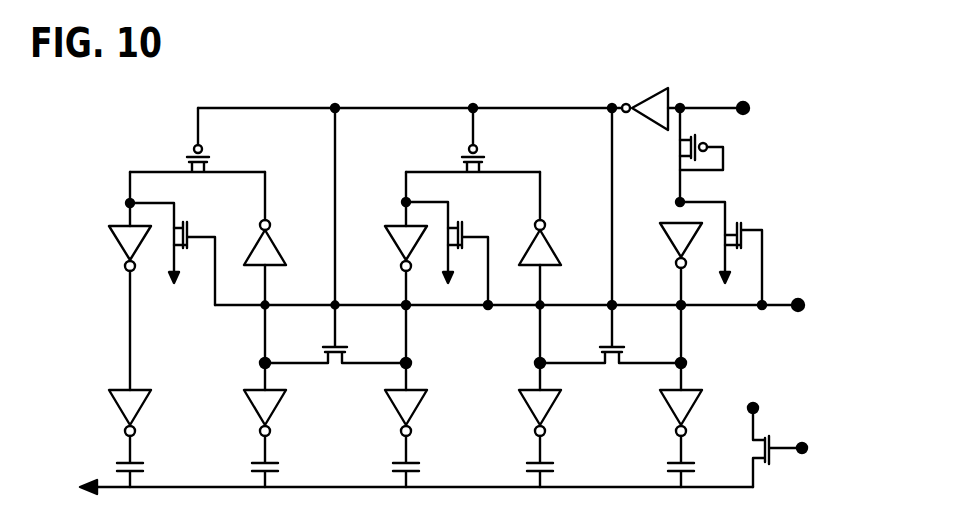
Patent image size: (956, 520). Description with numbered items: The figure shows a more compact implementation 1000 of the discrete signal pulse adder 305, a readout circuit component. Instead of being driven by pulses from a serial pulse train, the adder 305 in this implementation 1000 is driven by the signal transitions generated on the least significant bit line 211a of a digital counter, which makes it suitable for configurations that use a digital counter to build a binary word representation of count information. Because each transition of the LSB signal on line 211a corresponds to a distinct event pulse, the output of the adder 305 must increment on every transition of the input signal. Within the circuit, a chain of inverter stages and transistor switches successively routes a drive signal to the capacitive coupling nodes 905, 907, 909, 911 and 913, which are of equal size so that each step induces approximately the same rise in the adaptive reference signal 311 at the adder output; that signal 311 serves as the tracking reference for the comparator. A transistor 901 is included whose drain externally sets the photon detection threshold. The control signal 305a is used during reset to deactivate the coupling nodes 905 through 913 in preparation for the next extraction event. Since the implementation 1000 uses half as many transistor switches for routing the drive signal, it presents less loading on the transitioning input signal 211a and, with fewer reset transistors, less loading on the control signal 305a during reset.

The compact adder implementation 1000 is at (70, 100).
The adder 305 is at (397, 80).
The least significant bit line 211a is at (744, 106).
The control signal 305a is at (800, 302).
The adaptive reference signal 311 is at (87, 478).
The transistor 901 is at (766, 442).
The capacitive coupling node 905 is at (145, 465).
The capacitive coupling node 907 is at (280, 466).
The capacitive coupling node 909 is at (422, 463).
The capacitive coupling node 911 is at (555, 465).
The capacitive coupling node 913 is at (669, 463).